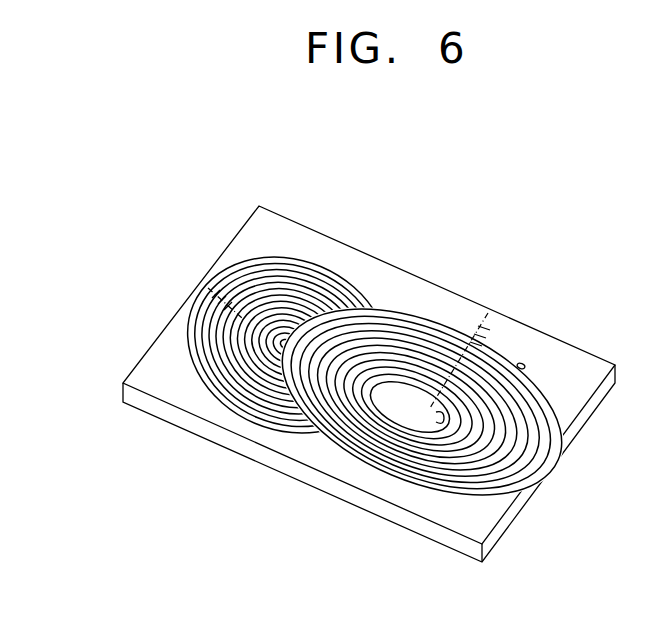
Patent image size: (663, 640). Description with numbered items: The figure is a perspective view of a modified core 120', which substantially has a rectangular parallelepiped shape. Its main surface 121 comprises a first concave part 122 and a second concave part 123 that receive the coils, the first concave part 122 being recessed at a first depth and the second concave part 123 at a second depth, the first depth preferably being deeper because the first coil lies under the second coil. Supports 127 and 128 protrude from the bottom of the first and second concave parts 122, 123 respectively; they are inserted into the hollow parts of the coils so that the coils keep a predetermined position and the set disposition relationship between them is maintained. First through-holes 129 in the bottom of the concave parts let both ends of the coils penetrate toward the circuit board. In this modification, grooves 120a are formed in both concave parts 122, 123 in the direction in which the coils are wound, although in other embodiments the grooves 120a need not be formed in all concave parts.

The core 120' is at (465, 224).
The grooves 120a is at (493, 433).
The main surface 121 is at (488, 517).
The first concave part 122 is at (492, 368).
The second concave part 123 is at (298, 280).
The support 127 is at (438, 418).
The support 128 is at (289, 345).
The first through-holes 129 is at (523, 364).